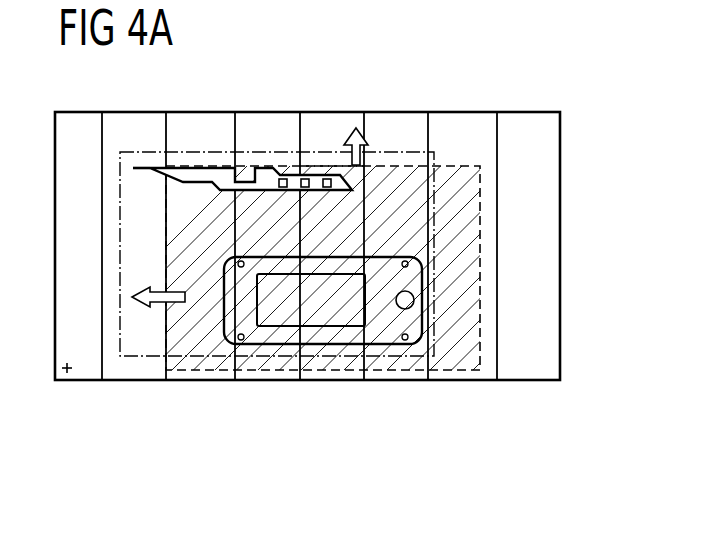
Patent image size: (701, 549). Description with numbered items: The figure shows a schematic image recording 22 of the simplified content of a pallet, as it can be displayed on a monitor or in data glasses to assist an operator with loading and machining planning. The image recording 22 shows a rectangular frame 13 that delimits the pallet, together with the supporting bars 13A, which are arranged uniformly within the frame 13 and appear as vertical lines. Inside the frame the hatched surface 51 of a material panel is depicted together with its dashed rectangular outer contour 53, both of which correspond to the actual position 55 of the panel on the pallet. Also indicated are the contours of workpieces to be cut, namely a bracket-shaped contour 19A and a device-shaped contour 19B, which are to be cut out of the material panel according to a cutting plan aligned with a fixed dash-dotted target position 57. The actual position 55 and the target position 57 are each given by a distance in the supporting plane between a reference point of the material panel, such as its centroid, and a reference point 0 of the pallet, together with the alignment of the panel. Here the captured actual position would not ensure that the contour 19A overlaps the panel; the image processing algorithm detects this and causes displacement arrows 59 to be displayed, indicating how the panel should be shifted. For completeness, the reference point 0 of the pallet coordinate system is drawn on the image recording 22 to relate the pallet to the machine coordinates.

The rectangular frame 13 is at (565, 243).
The supporting bars 13A is at (497, 123).
The image recording 22 is at (479, 92).
The surface of material panel 51 is at (190, 343).
The outer contour of material panel 53 is at (482, 290).
The target position 57 is at (108, 205).
The contour of workpiece 19A is at (218, 166).
The contour of workpiece 19B is at (388, 345).
The actual position 55 is at (325, 145).
The displacement arrows 59 is at (366, 150).
The reference point 0 is at (70, 375).